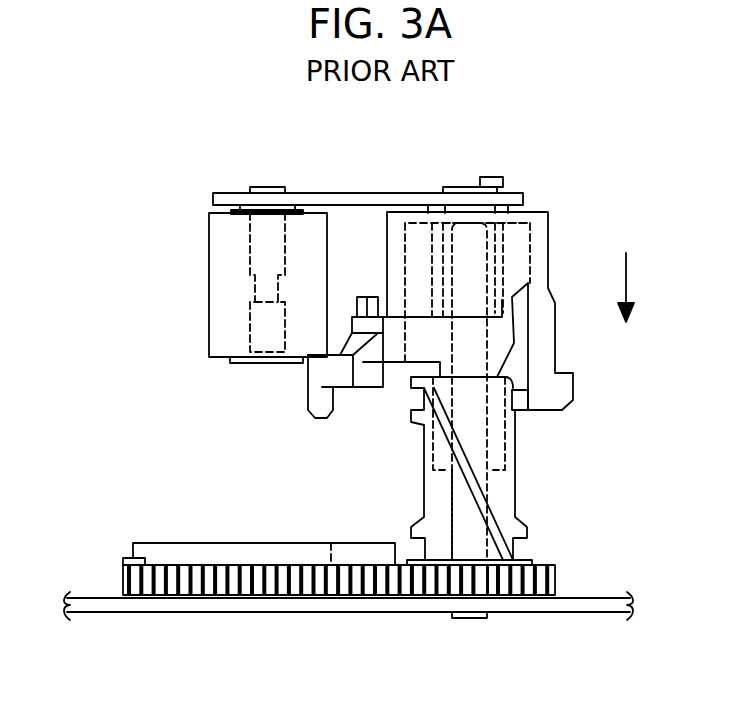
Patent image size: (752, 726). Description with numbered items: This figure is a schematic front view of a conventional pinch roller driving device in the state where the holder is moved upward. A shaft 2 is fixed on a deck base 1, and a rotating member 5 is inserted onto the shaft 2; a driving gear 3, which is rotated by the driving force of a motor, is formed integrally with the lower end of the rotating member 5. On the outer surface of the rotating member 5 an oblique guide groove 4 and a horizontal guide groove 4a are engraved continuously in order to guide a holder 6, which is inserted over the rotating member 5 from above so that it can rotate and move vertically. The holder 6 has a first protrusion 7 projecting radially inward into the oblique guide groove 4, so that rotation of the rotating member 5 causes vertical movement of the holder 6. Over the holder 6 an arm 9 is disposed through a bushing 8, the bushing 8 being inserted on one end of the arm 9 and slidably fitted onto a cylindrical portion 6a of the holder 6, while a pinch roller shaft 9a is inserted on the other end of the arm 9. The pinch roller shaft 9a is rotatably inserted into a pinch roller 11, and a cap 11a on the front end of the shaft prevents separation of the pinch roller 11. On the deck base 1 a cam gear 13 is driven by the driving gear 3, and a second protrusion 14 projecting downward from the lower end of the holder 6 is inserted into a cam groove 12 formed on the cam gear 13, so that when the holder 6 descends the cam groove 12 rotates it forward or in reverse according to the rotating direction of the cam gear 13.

The deck base 1 is at (580, 612).
The shaft 2 is at (433, 518).
The driving gear 3 is at (555, 578).
The oblique guide groove 4 is at (472, 483).
The horizontal guide groove 4a is at (513, 546).
The rotating member 5 is at (515, 507).
The holder 6 is at (555, 333).
The cylindrical portion 6a is at (530, 222).
The first protrusion 7 is at (523, 400).
The bushing 8 is at (508, 253).
The arm 9 is at (358, 193).
The pinch roller shaft 9a is at (250, 248).
The pinch roller 11 is at (221, 290).
The cap 11a is at (250, 325).
The cam groove 12 is at (187, 550).
The cam gear 13 is at (123, 580).
The second protrusion 14 is at (320, 398).